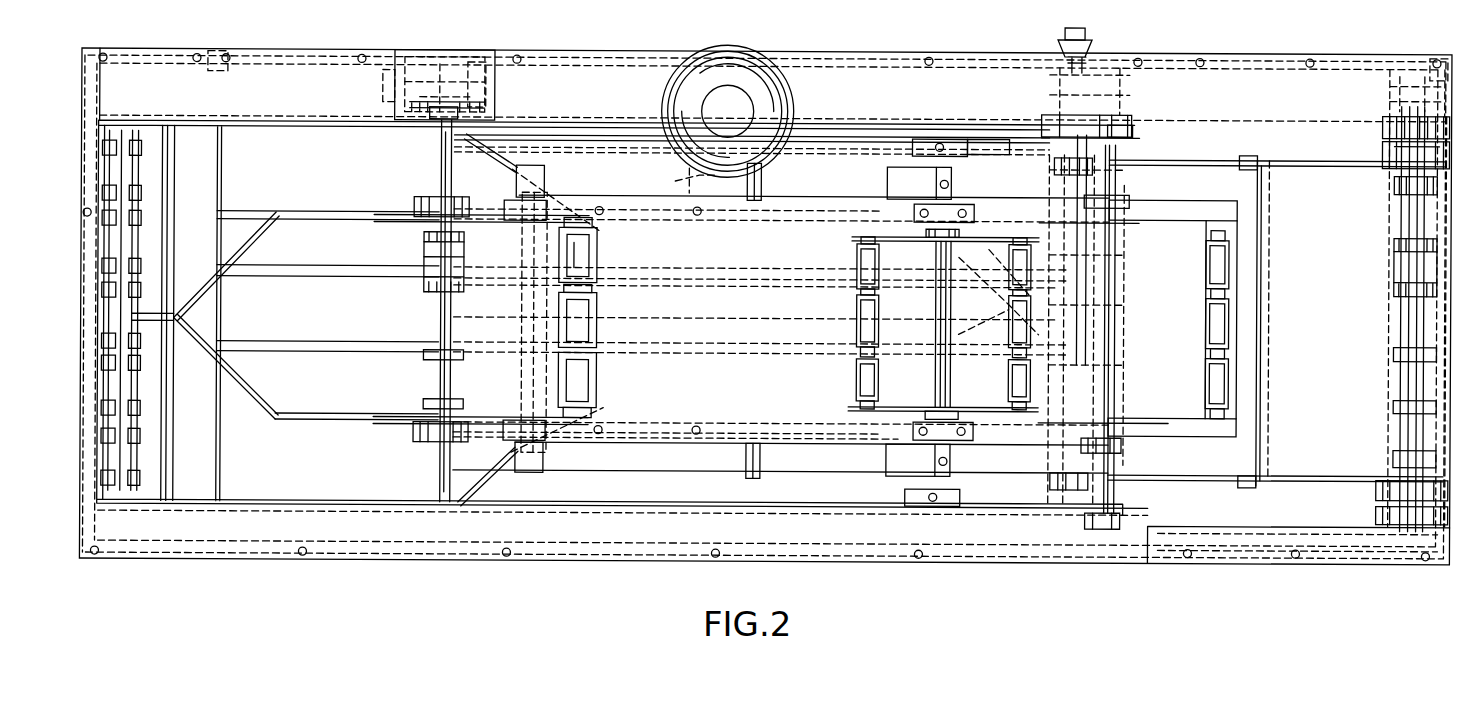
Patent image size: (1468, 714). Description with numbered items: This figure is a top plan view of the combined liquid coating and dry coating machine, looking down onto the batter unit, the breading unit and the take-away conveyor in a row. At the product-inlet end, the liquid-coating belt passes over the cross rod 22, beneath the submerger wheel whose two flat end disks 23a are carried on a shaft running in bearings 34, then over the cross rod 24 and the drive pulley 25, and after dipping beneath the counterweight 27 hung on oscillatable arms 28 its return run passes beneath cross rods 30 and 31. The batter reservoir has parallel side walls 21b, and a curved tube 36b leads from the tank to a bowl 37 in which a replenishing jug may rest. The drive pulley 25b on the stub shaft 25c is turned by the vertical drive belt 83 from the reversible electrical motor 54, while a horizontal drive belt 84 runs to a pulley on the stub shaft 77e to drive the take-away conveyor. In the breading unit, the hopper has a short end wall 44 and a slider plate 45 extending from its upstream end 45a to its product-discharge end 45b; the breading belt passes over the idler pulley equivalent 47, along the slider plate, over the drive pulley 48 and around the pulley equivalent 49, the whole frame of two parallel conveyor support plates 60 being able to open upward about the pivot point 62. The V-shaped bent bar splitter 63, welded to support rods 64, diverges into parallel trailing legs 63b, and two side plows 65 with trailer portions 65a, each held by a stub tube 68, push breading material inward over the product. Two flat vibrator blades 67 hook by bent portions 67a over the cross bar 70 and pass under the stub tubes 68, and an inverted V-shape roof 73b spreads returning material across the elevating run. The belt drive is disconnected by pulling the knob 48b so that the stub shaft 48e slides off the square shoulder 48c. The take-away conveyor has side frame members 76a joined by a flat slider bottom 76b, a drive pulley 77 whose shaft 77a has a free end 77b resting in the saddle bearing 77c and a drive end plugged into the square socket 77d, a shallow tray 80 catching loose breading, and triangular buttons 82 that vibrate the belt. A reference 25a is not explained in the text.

The side walls 21b is at (1188, 192).
The cross rod 22 is at (1230, 260).
The flat end disks 23a is at (935, 242).
The cross rod 24 is at (580, 250).
The drive pulley 25 is at (428, 292).
The shaft flange 25a is at (430, 115).
The drive pulley 25b is at (480, 55).
The stub shaft 25c is at (440, 55).
The counterweight 27 is at (598, 312).
The oscillatable arms 28 is at (545, 225).
The cross rod 30 is at (858, 250).
The cross rod 31 is at (1032, 395).
The bearings 34 is at (962, 200).
The curved tube 36b is at (672, 181).
The bowl 37 is at (748, 48).
The short end wall 44 is at (117, 377).
The slider plate 45 is at (300, 316).
The upstream end of slider plate 45a is at (218, 318).
The product-discharge end of slider plate 45b is at (888, 445).
The idler pulley equivalent 47 is at (142, 410).
The drive pulley 48 is at (1116, 255).
The knob 48b is at (1085, 28).
The axially centered square shoulder 48c is at (1042, 115).
The stub shaft 48e is at (1093, 45).
The idler pulley equivalent 49 is at (1118, 282).
The electrical motor 54 is at (365, 222).
The conveyor support plates 60 is at (265, 125).
The pivot point 62 is at (1133, 126).
The bent bar splitter 63 is at (195, 290).
The trailing legs 63b is at (312, 215).
The support rods 64 is at (175, 480).
The side plows 65 is at (500, 160).
The trailer portion 65a is at (660, 228).
The vibrator blades 67 is at (860, 190).
The bent portion 67a is at (517, 458).
The stub tube 68 is at (762, 185).
The cross bar 70 is at (523, 300).
The inverted V-shape roof 73b is at (858, 310).
The side frame members 76a is at (1305, 160).
The flat slider bottom 76b is at (1340, 322).
The drive pulley 77 is at (1395, 240).
The shaft 77a is at (1413, 205).
The free end of shaft 77b is at (1405, 472).
The saddle bearing 77c is at (1378, 512).
The axially centered square socket 77d is at (1400, 143).
The stub shaft 77e is at (1385, 95).
The shallow tray 80 is at (1258, 412).
The triangular shaped buttons 82 is at (1118, 300).
The drive belt 83 is at (395, 82).
The drive belt 84 is at (387, 55).